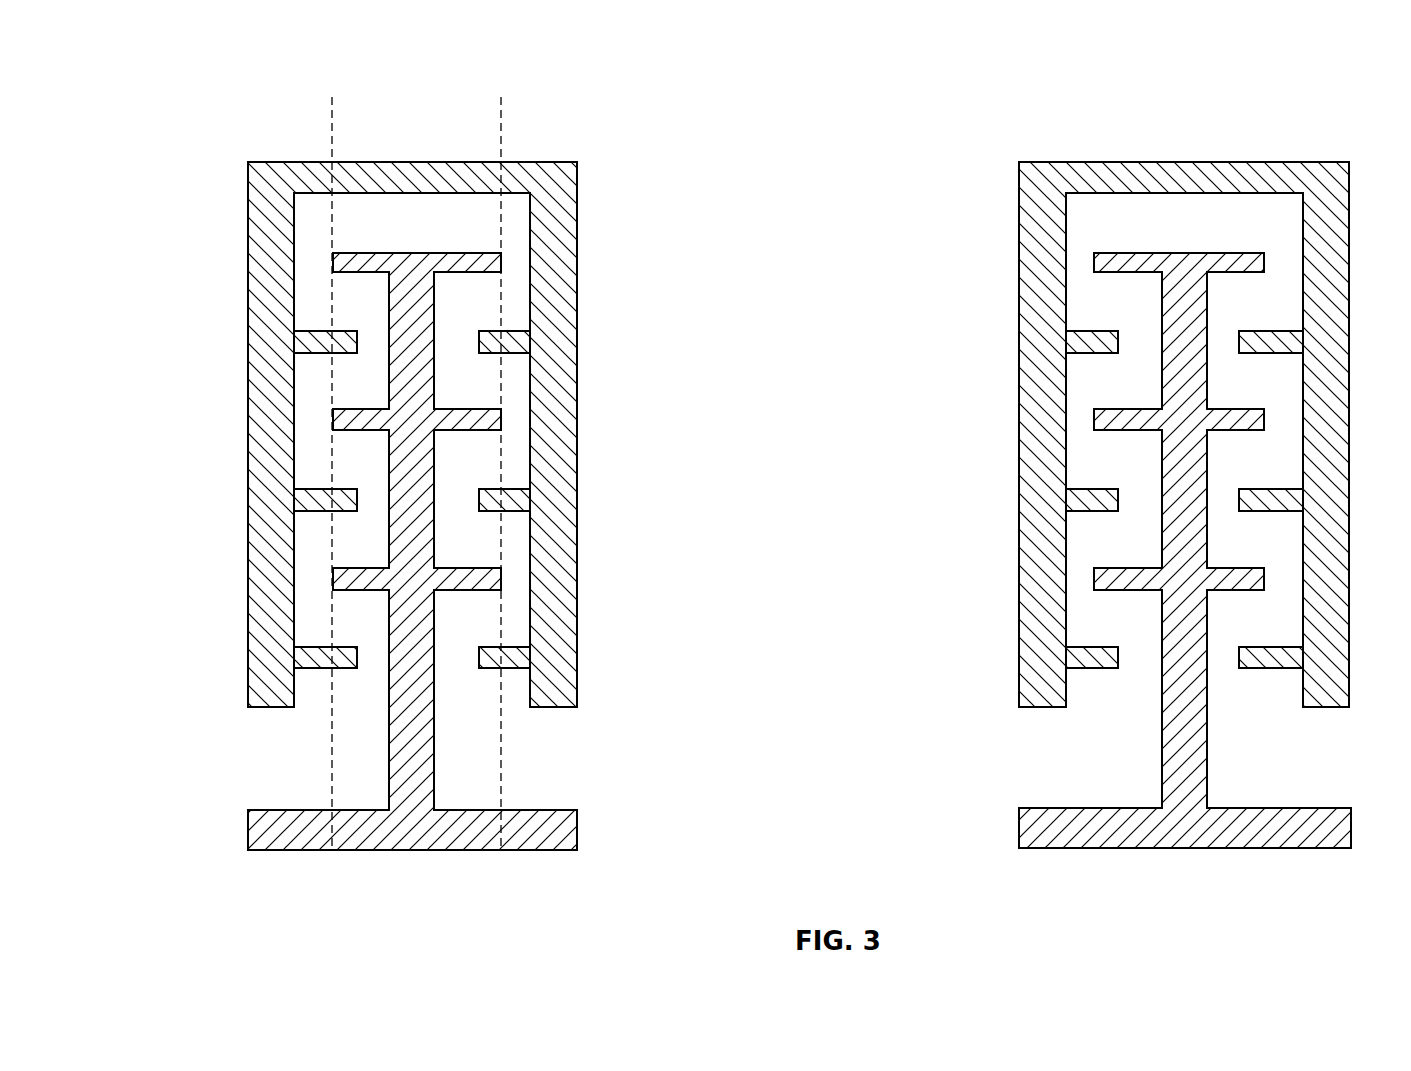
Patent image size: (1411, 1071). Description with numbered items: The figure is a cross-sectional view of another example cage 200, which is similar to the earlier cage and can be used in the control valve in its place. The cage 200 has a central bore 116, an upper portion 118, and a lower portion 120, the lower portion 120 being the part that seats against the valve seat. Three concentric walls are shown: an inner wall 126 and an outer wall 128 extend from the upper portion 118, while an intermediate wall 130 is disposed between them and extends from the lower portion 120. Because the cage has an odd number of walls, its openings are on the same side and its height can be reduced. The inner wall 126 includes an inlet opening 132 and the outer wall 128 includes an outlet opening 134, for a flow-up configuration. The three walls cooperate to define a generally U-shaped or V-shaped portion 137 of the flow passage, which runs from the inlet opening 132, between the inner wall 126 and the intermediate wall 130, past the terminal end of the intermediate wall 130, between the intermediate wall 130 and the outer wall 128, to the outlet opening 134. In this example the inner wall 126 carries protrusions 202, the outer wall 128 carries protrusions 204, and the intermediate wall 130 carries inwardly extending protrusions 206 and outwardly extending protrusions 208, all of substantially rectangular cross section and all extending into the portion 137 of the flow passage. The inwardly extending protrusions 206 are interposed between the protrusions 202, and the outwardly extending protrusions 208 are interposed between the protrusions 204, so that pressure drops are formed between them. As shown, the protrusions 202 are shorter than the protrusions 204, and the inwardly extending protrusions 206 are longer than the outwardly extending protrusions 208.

The cage 200 is at (786, 439).
The upper portion 118 is at (376, 434).
The outer wall 128 is at (260, 432).
The intermediate wall 130 is at (414, 551).
The inwardly extending protrusions 206 is at (473, 583).
The outwardly extending protrusions 208 is at (345, 579).
The protrusions 204 is at (324, 661).
The lower portion 120 is at (259, 832).
The central bore 116 is at (1169, 464).
The inner wall 126 is at (1030, 432).
The protrusions 202 is at (1089, 342).
The portion of the flow passage 137 is at (1108, 540).
The outlet opening 134 is at (1323, 708).
The inlet opening 132 is at (1027, 833).